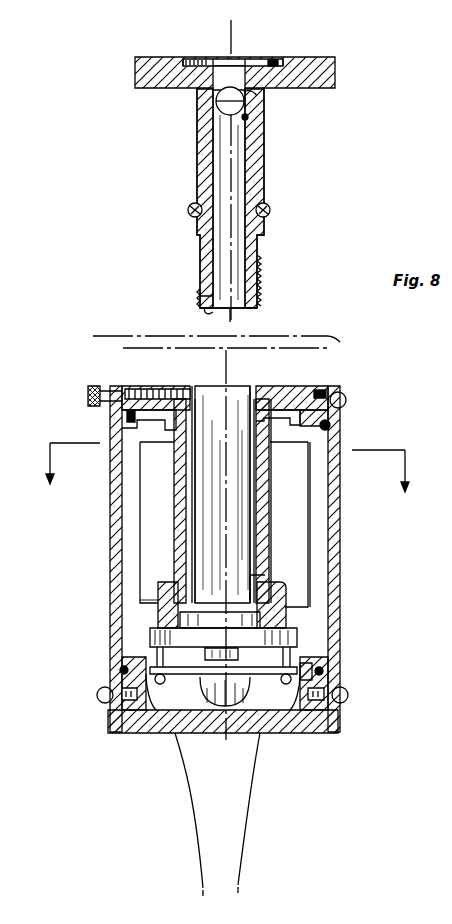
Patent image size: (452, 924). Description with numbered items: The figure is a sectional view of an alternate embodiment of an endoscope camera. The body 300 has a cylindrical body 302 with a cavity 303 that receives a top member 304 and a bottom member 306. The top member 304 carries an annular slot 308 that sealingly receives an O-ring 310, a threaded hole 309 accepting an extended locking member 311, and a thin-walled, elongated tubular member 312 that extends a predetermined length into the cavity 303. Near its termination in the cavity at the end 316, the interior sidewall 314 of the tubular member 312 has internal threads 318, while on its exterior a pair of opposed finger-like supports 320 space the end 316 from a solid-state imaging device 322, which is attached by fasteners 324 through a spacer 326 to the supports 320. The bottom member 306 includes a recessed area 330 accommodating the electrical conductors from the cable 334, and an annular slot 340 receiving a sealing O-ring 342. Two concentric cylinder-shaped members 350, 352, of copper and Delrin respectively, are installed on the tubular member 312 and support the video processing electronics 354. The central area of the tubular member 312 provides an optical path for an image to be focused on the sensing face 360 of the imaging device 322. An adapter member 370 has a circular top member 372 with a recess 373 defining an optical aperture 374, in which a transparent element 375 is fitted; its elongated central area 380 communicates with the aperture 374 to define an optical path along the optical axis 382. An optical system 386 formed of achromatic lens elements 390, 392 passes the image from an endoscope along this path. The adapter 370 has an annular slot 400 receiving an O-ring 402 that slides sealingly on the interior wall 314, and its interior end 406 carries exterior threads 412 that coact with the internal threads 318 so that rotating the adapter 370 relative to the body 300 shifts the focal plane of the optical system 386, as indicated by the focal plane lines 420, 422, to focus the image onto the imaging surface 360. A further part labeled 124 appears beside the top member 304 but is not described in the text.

The adapter member 370 is at (185, 157).
The circular top member 372 is at (336, 70).
The recess 373 is at (266, 171).
The optical aperture 374 is at (270, 59).
The knurled insert 375 is at (198, 57).
The elongated central area 380 is at (262, 268).
The optical axis 382 is at (223, 323).
The optical system 386 is at (218, 101).
The achromatic lens element 390 is at (262, 95).
The achromatic lens element 392 is at (250, 118).
The annular slot 400 is at (186, 200).
The O-ring 402 is at (272, 210).
The interior end 406 is at (246, 317).
The threads 412 is at (200, 291).
The focal plane line 420 is at (123, 348).
The focal plane line 422 is at (130, 336).
The seal block 124 is at (129, 379).
The body 300 is at (338, 480).
The cylindrical body 302 is at (334, 497).
The cavity 303 is at (315, 532).
The top member 304 is at (290, 388).
The bottom member 306 is at (325, 733).
The annular slot 308 is at (333, 437).
The threaded hole 309 is at (166, 385).
The O-ring 310 is at (338, 412).
The extended locking member 311 is at (88, 396).
The tubular member 312 is at (173, 500).
The interior sidewall 314 is at (160, 585).
The end 316 is at (288, 603).
The internal threads 318 is at (150, 632).
The finger-like supports 320 is at (298, 584).
The solid-state imaging device 322 is at (118, 676).
The fasteners 324 is at (160, 720).
The spacer 326 is at (118, 701).
The recessed area 330 is at (292, 733).
The cable 334 is at (244, 820).
The annular slot 340 is at (330, 691).
The sealing O-ring 342 is at (324, 670).
The cylinder-shaped member 350 is at (201, 408).
The cylinder-shaped member 352 is at (175, 470).
The video processing electronics 354 is at (170, 528).
The sensing face 360 is at (150, 669).